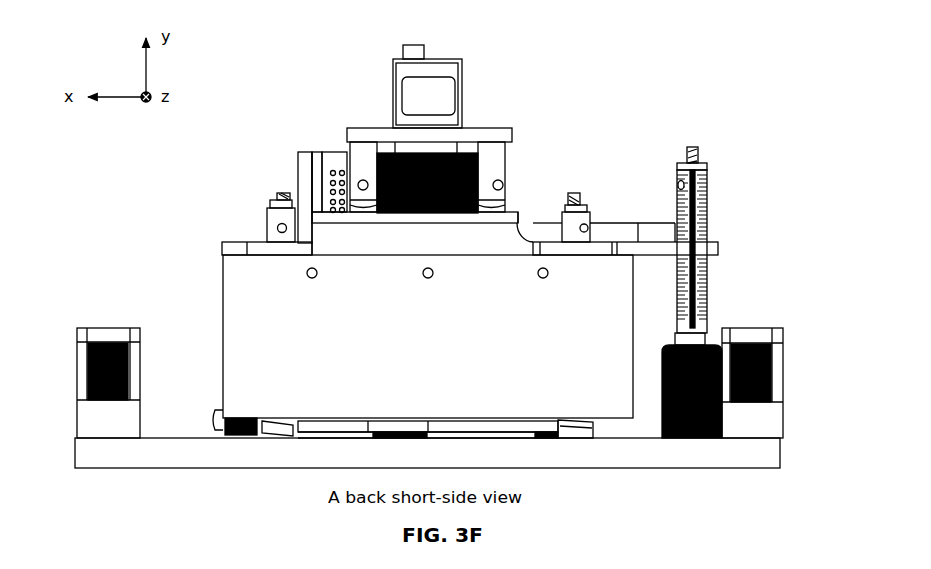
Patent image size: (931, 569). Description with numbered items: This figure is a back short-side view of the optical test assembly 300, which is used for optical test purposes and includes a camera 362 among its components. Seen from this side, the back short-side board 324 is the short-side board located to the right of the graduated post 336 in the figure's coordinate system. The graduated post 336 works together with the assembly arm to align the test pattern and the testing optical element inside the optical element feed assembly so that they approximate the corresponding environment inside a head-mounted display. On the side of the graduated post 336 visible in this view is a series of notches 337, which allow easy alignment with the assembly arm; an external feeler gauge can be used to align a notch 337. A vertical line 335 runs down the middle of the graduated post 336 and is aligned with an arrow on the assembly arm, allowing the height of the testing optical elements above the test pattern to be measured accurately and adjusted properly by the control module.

The optical test assembly 300 is at (700, 63).
The short-side board 324 is at (273, 332).
The vertical line 335 is at (695, 292).
The graduated post 336 is at (708, 193).
The notch 337 is at (672, 202).
The camera 362 is at (420, 102).